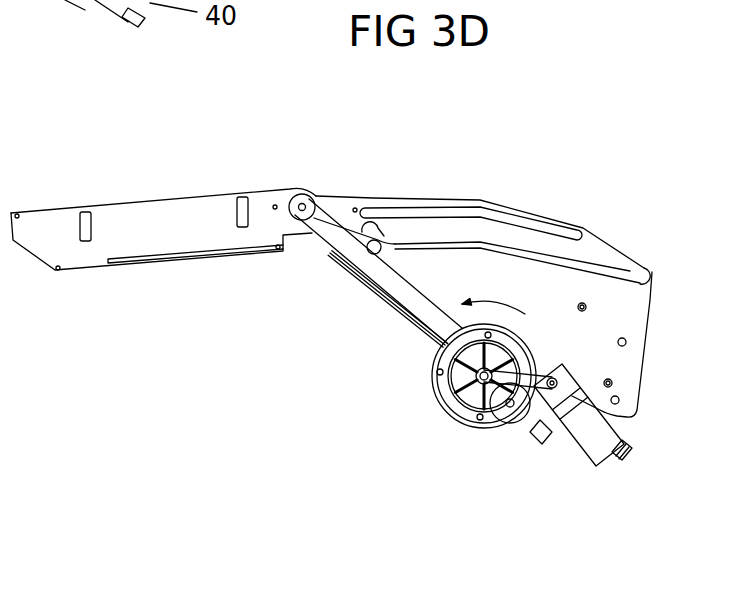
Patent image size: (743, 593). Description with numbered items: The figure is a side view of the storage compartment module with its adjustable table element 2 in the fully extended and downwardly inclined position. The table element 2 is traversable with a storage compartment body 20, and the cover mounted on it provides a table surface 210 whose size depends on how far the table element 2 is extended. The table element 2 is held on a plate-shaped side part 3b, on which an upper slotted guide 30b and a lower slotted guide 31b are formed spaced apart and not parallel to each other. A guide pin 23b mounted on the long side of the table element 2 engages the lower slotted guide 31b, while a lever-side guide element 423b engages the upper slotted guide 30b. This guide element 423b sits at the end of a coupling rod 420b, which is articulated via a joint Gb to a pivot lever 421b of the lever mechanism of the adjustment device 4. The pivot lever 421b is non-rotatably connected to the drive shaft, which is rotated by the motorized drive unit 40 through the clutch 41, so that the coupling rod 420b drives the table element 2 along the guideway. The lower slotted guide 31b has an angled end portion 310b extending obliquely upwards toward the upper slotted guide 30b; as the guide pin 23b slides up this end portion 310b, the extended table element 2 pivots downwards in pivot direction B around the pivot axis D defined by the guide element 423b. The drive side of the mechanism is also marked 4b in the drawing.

The table element 2 is at (182, 190).
The storage compartment body 20 is at (85, 255).
The table surface 210 is at (122, 192).
The pivot direction B is at (62, 162).
The pivot axis D is at (297, 212).
The guide element 423b is at (307, 198).
The coupling rod 420b is at (333, 227).
The guide pin 23b is at (373, 230).
The joint Gb is at (370, 253).
The angled end portion 310b is at (388, 247).
The pivot lever 421b is at (427, 310).
The drive bar 4b is at (412, 247).
The upper slotted guide 30b is at (558, 232).
The lower slotted guide 31b is at (640, 267).
The side part 3b is at (638, 316).
The adjustment device 4 is at (457, 435).
The clutch 41 is at (479, 418).
The motorized drive unit 40 is at (598, 435).